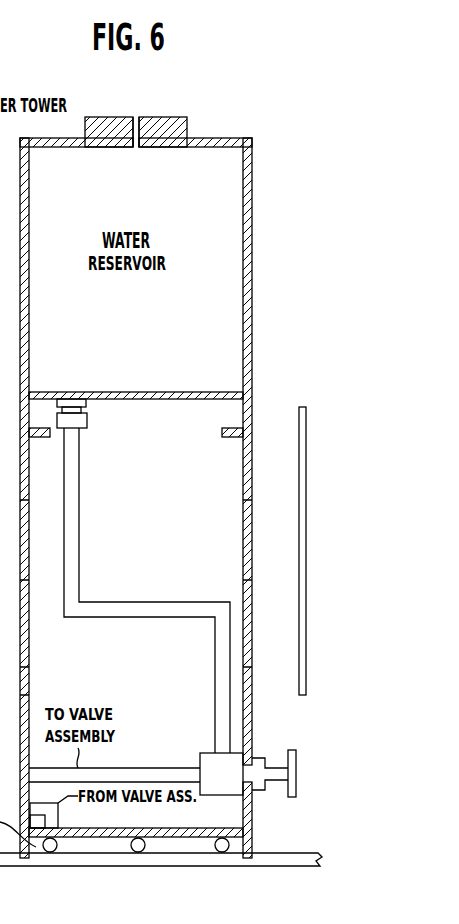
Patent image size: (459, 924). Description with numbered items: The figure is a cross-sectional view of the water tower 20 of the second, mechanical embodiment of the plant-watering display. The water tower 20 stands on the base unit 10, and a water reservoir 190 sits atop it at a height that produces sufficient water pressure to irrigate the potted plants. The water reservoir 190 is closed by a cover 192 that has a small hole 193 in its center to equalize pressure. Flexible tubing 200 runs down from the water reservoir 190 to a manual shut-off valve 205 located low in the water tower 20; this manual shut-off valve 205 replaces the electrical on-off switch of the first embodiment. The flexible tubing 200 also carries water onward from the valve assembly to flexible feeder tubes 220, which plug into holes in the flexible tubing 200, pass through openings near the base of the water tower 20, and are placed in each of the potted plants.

The base unit 10 is at (303, 852).
The water tower 20 is at (248, 487).
The water reservoir 190 is at (233, 264).
The cover 192 is at (187, 124).
The small hole 193 is at (136, 149).
The flexible tubing 200 is at (80, 474).
The manual shut-off valve 205 is at (260, 758).
The flexible feeder tubes 220 is at (303, 405).